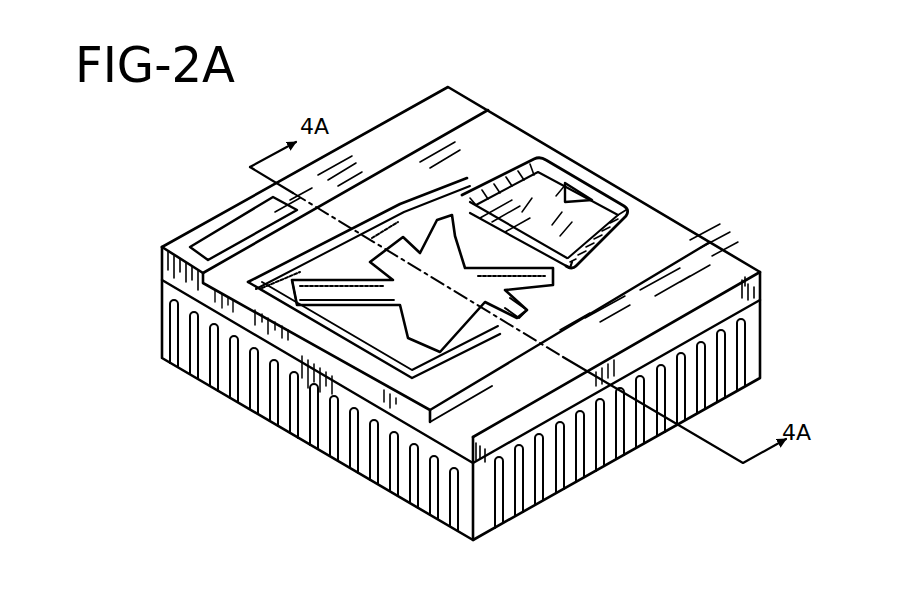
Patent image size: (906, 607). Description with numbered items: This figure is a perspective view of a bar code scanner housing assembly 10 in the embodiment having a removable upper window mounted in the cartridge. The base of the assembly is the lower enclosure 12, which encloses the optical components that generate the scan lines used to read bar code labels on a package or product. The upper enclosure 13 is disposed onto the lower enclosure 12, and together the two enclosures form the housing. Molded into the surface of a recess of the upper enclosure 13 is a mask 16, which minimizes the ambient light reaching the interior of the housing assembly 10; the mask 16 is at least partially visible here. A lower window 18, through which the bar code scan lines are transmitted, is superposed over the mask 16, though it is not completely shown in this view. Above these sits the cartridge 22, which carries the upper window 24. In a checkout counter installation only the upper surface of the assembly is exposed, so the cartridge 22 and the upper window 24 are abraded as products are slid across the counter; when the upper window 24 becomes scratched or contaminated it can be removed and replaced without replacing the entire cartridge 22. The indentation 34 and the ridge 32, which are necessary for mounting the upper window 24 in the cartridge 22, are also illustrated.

The housing assembly 10 is at (520, 82).
The lower enclosure 12 is at (362, 462).
The upper enclosure 13 is at (158, 264).
The mask 16 is at (446, 280).
The lower window 18 is at (430, 332).
The cartridge 22 is at (662, 236).
The upper window 24 is at (335, 316).
The ridge 32 is at (400, 222).
The indentation 34 is at (550, 192).